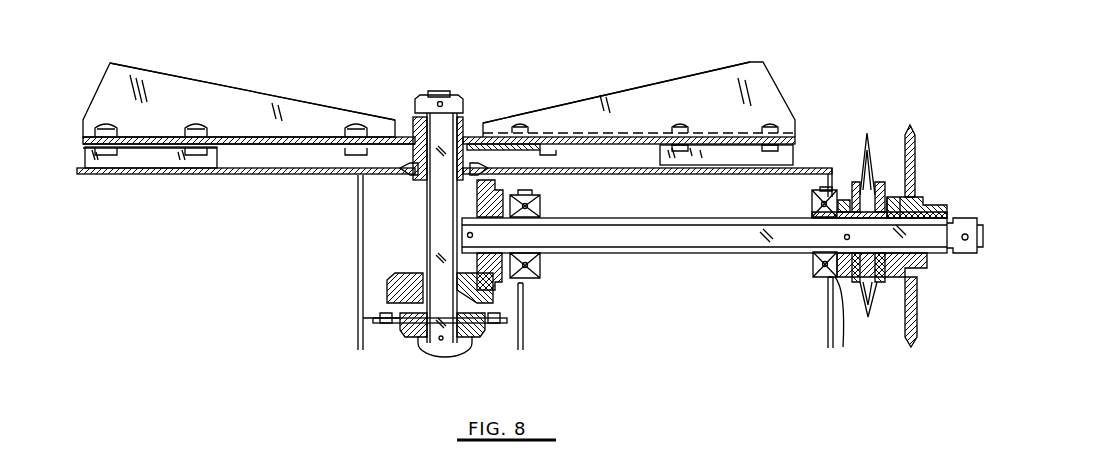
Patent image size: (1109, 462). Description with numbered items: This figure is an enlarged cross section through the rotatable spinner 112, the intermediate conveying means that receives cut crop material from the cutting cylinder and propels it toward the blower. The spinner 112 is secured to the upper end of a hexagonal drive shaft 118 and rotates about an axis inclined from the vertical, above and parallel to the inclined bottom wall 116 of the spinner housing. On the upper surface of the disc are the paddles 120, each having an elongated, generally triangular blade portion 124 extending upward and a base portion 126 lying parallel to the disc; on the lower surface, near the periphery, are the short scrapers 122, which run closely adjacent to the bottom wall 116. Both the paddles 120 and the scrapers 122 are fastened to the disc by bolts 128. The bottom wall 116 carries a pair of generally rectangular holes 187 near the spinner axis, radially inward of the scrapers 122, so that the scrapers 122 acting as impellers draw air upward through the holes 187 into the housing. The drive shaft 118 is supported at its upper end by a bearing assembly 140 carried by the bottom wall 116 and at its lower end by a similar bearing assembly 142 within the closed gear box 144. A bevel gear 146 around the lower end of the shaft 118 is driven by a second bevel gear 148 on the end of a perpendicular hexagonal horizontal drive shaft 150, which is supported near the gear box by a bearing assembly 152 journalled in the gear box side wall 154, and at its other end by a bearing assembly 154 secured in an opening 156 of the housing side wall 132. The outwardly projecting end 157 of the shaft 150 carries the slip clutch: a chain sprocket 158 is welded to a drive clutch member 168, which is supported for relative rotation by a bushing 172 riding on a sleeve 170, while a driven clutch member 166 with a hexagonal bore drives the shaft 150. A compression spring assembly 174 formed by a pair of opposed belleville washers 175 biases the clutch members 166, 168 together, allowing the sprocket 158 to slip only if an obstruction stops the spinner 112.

The rotatable spinner 112 is at (784, 91).
The bottom wall 116 is at (202, 172).
The hexagonal drive shaft 118 is at (427, 208).
The paddles 120 is at (182, 82).
The scrapers 122 is at (153, 157).
The blade portion 124 is at (256, 93).
The base portion 126 is at (553, 130).
The bolts 128 is at (503, 120).
The spinner housing side wall 132 is at (828, 333).
The bearing assembly 140 is at (413, 178).
The bearing assembly 142 is at (413, 328).
The gear box 144 is at (358, 221).
The bevel gear 146 is at (410, 277).
The second bevel gear 148 is at (490, 273).
The horizontal drive shaft 150 is at (668, 253).
The bearing assembly 152 is at (537, 265).
The bearing assembly 154 is at (523, 335).
The opening 156 is at (853, 322).
The outwardly projecting end 157 is at (940, 262).
The chain sprocket 158 is at (912, 127).
The driven clutch member 166 is at (928, 198).
The drive clutch member 168 is at (917, 195).
The sleeve 170 is at (843, 197).
The bushing 172 is at (914, 278).
The compression spring assembly 174 is at (873, 320).
The belleville washers 175 is at (869, 162).
The holes 187 is at (247, 172).